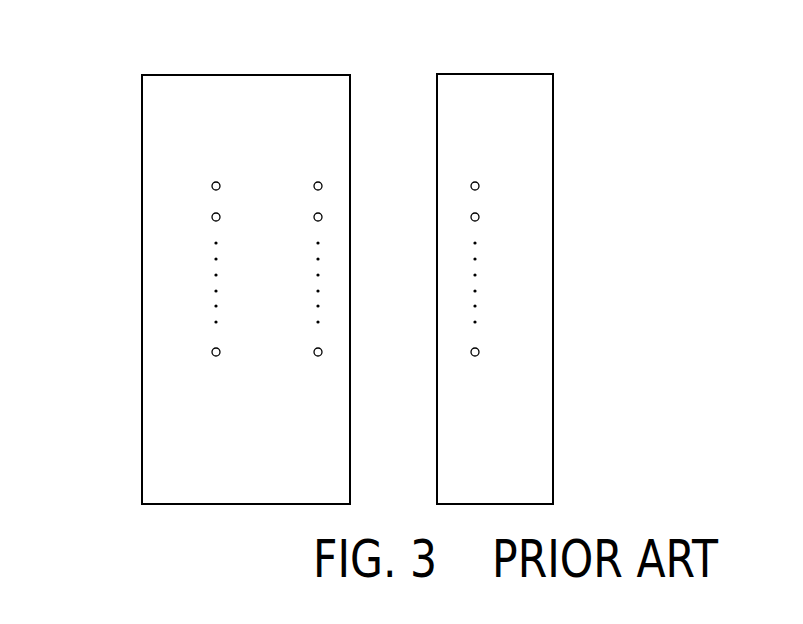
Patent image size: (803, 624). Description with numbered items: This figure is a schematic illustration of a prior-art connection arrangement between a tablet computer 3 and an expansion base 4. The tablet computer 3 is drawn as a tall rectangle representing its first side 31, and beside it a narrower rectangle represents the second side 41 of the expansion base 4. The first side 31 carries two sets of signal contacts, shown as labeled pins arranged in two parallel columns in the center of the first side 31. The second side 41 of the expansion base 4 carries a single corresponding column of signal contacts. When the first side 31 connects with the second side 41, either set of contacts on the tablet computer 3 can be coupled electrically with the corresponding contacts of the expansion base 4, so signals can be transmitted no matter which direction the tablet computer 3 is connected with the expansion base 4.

The tablet computer 3 is at (197, 254).
The first side 31 is at (248, 75).
The expansion base 4 is at (544, 254).
The second side 41 is at (513, 74).